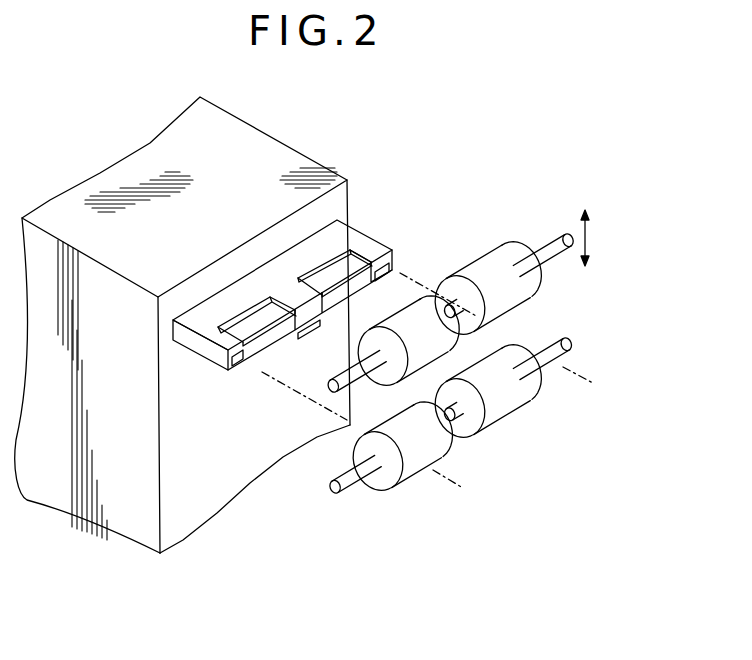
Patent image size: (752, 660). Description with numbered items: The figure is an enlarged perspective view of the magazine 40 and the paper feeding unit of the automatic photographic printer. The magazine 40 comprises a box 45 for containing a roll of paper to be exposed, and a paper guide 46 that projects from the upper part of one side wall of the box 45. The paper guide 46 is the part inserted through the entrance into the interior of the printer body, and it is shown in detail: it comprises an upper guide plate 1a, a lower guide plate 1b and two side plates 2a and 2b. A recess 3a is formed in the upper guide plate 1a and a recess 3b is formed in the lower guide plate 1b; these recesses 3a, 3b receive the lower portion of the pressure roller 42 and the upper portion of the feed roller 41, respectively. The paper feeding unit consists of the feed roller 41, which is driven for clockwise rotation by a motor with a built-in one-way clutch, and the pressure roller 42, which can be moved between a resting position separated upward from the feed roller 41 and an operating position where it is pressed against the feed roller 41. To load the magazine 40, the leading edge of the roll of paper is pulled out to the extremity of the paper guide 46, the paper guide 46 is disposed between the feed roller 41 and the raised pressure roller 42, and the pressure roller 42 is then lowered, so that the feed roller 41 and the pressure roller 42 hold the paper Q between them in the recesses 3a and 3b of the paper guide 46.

The magazine 40 is at (143, 135).
The box 45 is at (270, 143).
The paper guide 46 is at (371, 217).
The upper guide plate 1a is at (273, 262).
The lower guide plate 1b is at (310, 322).
The side plate 2a is at (203, 348).
The side plate 2b is at (392, 262).
The recess 3a is at (243, 325).
The recess 3b is at (280, 330).
The paper Q is at (258, 340).
The feed roller 41 is at (500, 423).
The pressure roller 42 is at (467, 277).